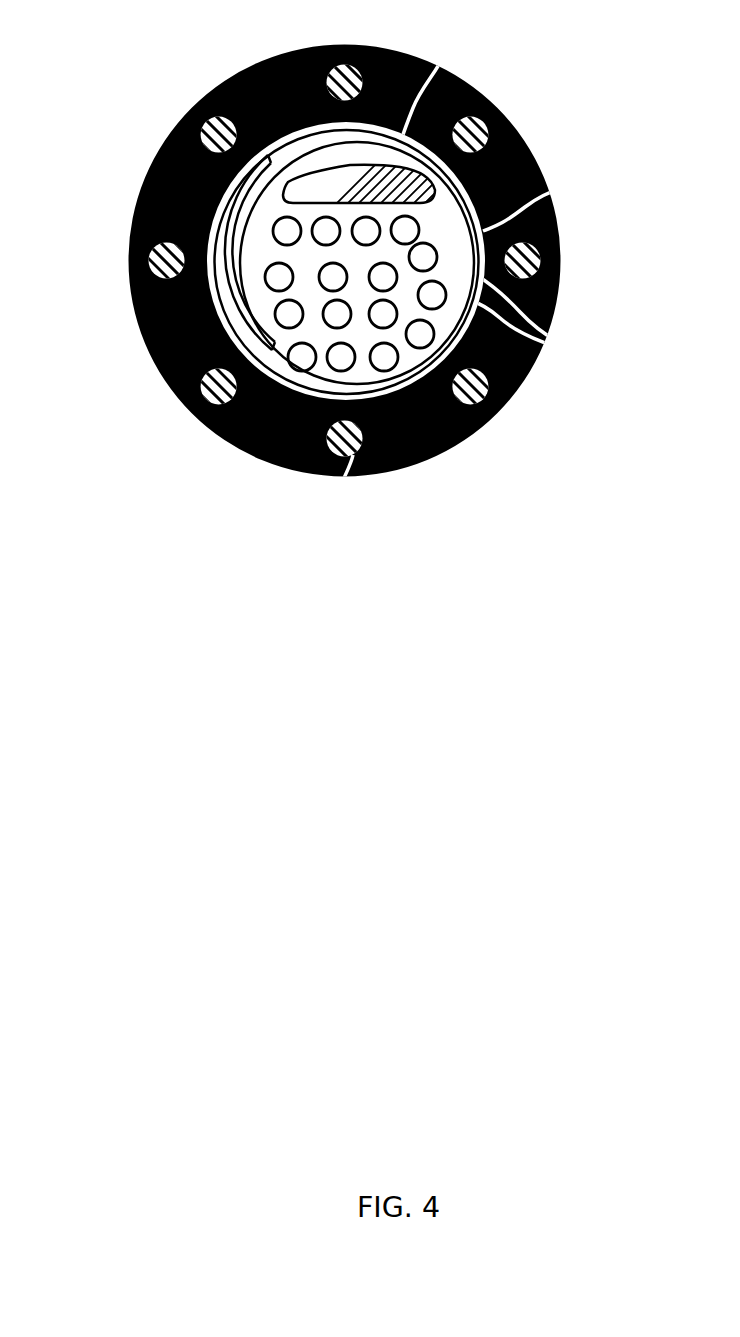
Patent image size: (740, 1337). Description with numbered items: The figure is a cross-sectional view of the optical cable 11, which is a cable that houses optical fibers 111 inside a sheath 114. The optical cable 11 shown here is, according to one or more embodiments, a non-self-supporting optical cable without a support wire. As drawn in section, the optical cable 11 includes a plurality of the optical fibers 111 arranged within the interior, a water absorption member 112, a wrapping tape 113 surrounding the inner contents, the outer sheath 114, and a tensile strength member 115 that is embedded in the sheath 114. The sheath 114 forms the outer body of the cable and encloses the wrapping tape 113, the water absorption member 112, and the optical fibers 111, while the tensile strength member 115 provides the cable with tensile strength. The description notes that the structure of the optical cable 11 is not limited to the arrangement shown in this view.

The optical cable 11 is at (370, 300).
The optical fiber 111 is at (423, 257).
The water absorption member 112 is at (392, 173).
The wrapping tape 113 is at (483, 231).
The sheath 114 is at (141, 338).
The tensile strength member 115 is at (353, 455).